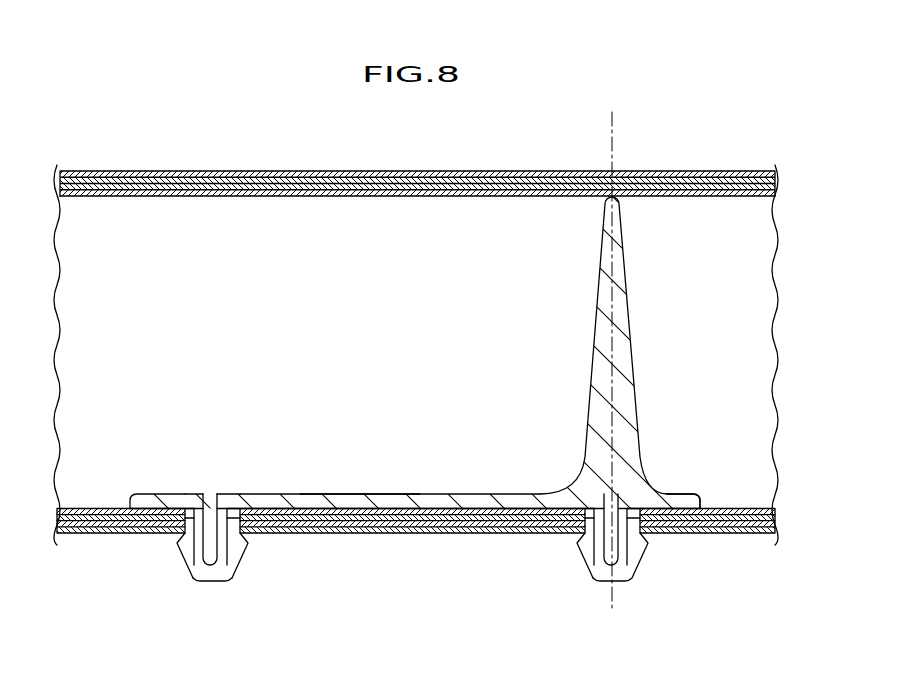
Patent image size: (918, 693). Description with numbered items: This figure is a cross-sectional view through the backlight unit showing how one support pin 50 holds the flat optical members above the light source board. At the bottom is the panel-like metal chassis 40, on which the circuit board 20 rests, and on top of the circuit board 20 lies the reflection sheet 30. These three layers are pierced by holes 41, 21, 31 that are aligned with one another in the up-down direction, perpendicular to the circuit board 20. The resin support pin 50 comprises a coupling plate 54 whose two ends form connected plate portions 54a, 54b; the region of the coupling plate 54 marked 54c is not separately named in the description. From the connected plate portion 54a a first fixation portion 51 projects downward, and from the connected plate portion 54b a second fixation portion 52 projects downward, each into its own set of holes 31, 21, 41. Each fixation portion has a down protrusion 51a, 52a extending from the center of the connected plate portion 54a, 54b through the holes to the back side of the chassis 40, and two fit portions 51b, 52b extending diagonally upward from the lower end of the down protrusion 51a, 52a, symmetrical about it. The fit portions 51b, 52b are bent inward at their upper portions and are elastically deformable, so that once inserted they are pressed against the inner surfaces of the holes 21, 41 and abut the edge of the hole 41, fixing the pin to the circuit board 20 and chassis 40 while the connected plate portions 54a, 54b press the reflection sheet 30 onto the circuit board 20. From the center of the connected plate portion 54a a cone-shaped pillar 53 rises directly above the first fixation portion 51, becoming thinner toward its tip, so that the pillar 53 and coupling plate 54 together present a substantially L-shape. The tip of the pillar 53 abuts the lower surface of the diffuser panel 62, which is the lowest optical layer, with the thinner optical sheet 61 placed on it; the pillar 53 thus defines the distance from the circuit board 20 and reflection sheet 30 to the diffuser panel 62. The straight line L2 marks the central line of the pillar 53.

The circuit board 20 is at (67, 533).
The hole 21 is at (195, 500).
The reflection sheet 30 is at (95, 508).
The hole 31 is at (236, 500).
The chassis 40 is at (111, 527).
The hole 41 is at (416, 545).
The support pin 50 is at (459, 427).
The first fixation portion 51 is at (613, 579).
The down protrusion 51a is at (580, 561).
The fit portion 51b is at (592, 567).
The second fixation portion 52 is at (209, 598).
The down protrusion 52a is at (203, 582).
The fit portion 52b is at (184, 565).
The pillar 53 is at (588, 372).
The coupling plate 54 is at (444, 460).
The connected plate portion 54a is at (697, 493).
The connected plate portion 54b is at (212, 494).
The flange intermediate portion 54c is at (376, 490).
The optical sheet 61 is at (150, 171).
The diffuser panel 62 is at (90, 197).
The straight line L2 is at (611, 349).